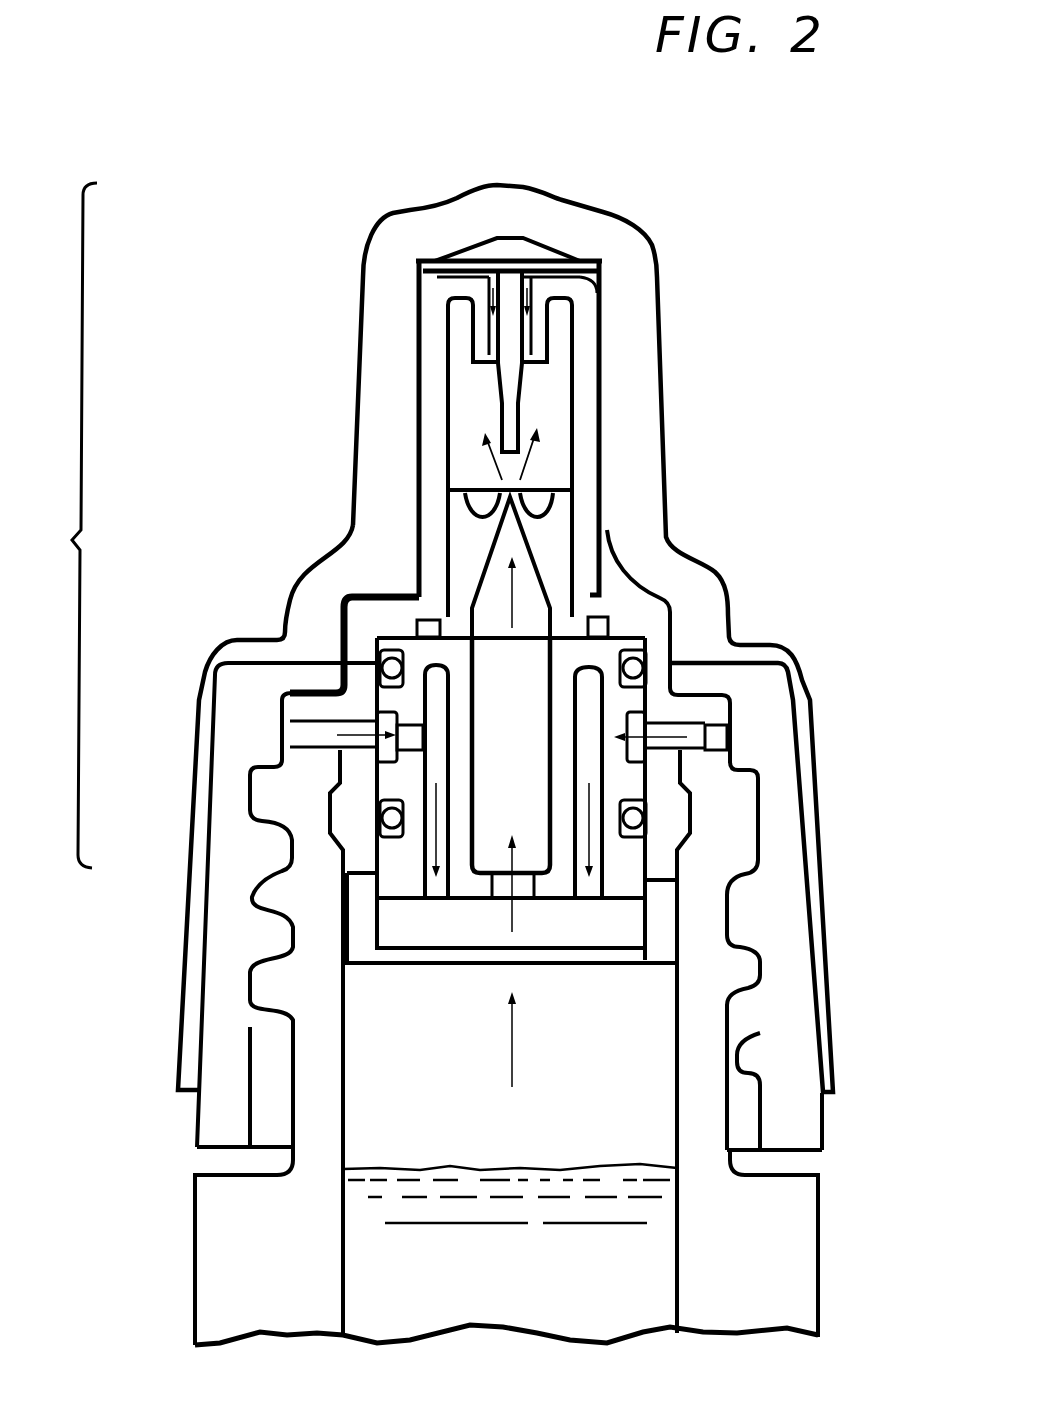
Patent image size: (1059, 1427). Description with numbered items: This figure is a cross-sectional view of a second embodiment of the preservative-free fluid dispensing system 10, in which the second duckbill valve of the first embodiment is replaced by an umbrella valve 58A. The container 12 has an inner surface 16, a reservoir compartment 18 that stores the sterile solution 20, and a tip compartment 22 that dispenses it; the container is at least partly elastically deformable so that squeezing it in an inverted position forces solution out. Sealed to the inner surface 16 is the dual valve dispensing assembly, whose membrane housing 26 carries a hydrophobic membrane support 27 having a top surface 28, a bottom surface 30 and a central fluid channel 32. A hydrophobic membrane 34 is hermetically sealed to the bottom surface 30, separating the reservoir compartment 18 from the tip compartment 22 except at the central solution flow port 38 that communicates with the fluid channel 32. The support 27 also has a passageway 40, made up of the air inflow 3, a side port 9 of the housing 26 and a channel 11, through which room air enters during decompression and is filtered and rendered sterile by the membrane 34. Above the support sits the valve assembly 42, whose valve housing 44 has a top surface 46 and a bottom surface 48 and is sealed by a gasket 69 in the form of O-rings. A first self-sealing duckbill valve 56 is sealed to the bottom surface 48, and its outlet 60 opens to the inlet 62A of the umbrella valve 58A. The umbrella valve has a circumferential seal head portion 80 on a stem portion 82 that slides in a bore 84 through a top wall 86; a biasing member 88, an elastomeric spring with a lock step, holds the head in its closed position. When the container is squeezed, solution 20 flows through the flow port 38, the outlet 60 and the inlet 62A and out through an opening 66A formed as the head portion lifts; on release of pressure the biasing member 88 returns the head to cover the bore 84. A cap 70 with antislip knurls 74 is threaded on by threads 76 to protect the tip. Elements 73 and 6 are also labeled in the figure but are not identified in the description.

The preservative-free fluid dispensing system 10 is at (287, 163).
The container 12 is at (710, 1037).
The inner surface 16 is at (675, 1090).
The reservoir compartment 18 is at (190, 1262).
The sterile solution 20 is at (510, 1227).
The tip compartment 22 is at (62, 525).
The membrane housing 26 is at (640, 868).
The hydrophobic membrane support 27 is at (397, 850).
The top surface 28 is at (340, 598).
The inflow 3 is at (713, 732).
The side port 9 is at (335, 730).
The channel 11 is at (440, 767).
The bottom surface 30 is at (588, 938).
The central fluid channel 32 is at (648, 660).
The hydrophobic membrane 34 is at (400, 910).
The central solution flow port 38 is at (503, 887).
The passageway 40 is at (727, 717).
The valve assembly 42 is at (468, 547).
The valve housing 44 is at (647, 625).
The top surface 46 is at (468, 410).
The bottom surface 48 is at (390, 660).
The first self-sealing valve 56 is at (457, 570).
The umbrella valve 58A is at (527, 250).
The outlet 60 is at (495, 500).
The inlet 62A is at (458, 423).
The opening 66A is at (480, 278).
The gasket 69 is at (635, 660).
The cap 70 is at (510, 183).
The piston 73 is at (507, 835).
The antislip knurls 74 is at (830, 1092).
The threads 76 is at (270, 1013).
The circumferential seal head portion 80 is at (463, 250).
The stem portion 82 is at (503, 320).
The bore 84 is at (530, 320).
The top wall 86 is at (588, 285).
The biasing member 88 is at (530, 398).
The nozzle stem 6 is at (468, 380).